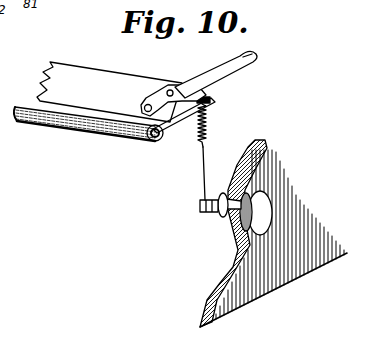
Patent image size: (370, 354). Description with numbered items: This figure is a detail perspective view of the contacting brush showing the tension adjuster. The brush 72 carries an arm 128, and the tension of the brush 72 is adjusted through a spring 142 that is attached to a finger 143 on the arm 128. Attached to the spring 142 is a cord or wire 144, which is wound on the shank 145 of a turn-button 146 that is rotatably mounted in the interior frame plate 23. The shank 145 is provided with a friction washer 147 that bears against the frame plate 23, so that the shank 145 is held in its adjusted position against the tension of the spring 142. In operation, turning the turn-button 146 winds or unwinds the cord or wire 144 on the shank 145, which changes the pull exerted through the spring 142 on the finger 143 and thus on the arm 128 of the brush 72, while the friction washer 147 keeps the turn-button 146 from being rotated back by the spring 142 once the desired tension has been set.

The arm 128 is at (236, 73).
The brush 72 is at (200, 91).
The finger 143 is at (212, 102).
The spring 142 is at (210, 122).
The cord or wire 144 is at (206, 157).
The shank 145 is at (240, 195).
The friction washer 147 is at (252, 208).
The turn-button 146 is at (266, 214).
The interior frame plate 23 is at (290, 265).